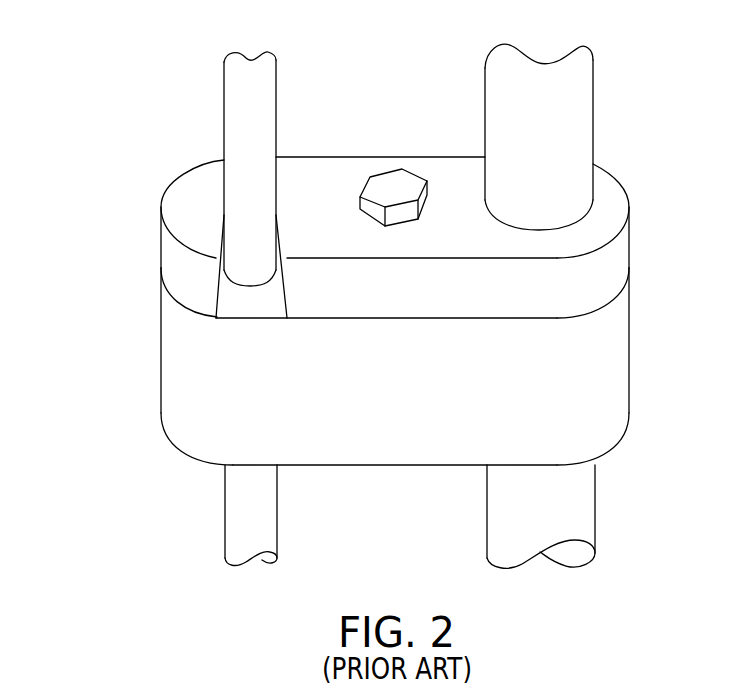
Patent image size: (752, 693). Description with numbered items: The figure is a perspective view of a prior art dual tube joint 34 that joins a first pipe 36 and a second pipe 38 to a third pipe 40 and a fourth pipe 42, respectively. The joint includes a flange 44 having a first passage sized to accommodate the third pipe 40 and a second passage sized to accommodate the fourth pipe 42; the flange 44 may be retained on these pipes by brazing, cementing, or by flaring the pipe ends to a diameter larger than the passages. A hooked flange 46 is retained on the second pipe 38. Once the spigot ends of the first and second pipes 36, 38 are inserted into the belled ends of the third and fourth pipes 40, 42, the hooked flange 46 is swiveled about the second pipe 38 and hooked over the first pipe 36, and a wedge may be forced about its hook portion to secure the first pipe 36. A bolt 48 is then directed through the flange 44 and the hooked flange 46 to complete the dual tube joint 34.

The dual tube joint 34 is at (82, 431).
The first pipe 36 is at (222, 108).
The second pipe 38 is at (594, 112).
The third pipe 40 is at (232, 518).
The fourth pipe 42 is at (590, 500).
The flange 44 is at (163, 354).
The hooked flange 46 is at (629, 245).
The bolt 48 is at (390, 180).